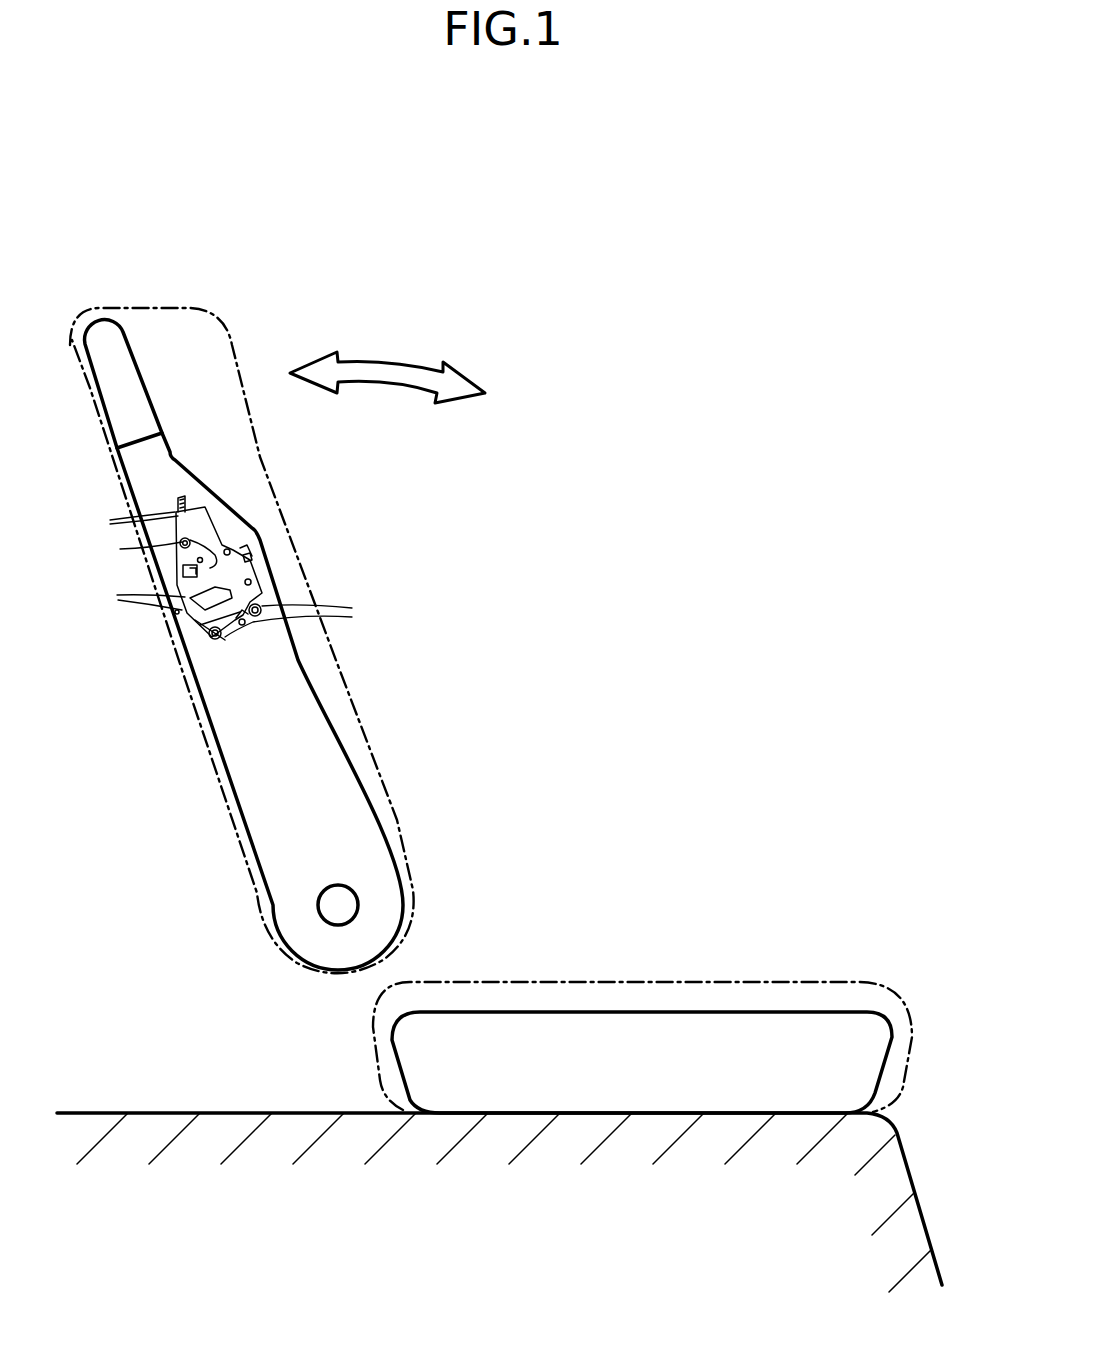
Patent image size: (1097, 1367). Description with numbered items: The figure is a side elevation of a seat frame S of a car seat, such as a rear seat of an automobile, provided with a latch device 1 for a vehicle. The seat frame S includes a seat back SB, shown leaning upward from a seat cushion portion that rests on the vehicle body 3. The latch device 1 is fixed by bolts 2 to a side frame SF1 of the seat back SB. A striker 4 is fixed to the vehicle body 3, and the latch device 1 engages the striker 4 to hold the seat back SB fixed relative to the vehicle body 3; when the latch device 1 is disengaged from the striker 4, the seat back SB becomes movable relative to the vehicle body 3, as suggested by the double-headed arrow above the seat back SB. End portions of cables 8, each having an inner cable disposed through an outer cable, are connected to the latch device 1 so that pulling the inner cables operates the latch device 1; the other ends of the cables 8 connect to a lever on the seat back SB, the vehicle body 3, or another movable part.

The latch device for a vehicle 1 is at (237, 540).
The bolts 2 is at (235, 586).
The vehicle body 3 is at (155, 1125).
The striker 4 is at (139, 594).
The cables 8 is at (133, 523).
The seat frame S is at (725, 432).
The seat back SB is at (423, 553).
The side frame SF1 is at (322, 747).